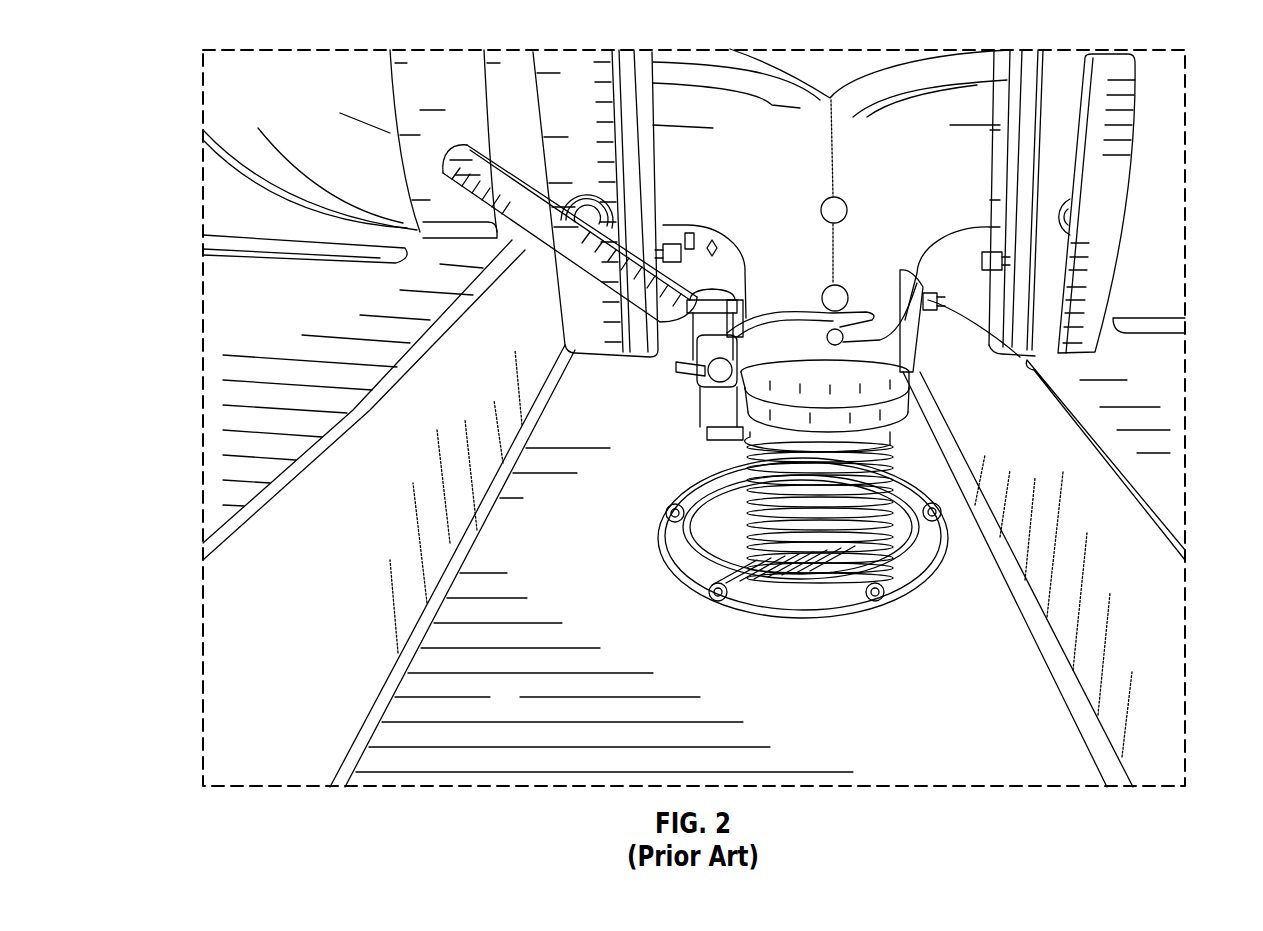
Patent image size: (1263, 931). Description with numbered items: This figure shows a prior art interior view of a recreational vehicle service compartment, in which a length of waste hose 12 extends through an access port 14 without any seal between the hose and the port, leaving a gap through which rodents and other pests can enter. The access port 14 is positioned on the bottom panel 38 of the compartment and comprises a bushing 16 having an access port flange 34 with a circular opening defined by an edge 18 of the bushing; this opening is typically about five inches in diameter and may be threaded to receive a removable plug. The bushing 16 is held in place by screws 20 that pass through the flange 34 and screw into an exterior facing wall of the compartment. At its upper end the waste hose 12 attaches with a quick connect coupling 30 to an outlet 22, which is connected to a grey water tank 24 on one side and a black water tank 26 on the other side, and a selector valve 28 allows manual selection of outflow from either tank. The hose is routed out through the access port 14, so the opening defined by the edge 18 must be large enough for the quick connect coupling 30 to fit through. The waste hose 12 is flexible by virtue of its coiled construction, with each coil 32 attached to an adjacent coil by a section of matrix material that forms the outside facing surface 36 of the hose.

The waste hose 12 is at (748, 462).
The access port 14 is at (808, 569).
The bushing 16 is at (775, 604).
The edge 18 is at (710, 500).
The screws 20 is at (709, 596).
The outlet 22 is at (910, 188).
The grey water tank 24 is at (1173, 191).
The black water tank 26 is at (238, 216).
The selector valve 28 is at (684, 364).
The quick connect coupling 30 is at (905, 338).
The coil 32 is at (885, 495).
The access port flange 34 is at (833, 606).
The outside facing surface 36 is at (752, 445).
The bottom panel 38 is at (488, 714).